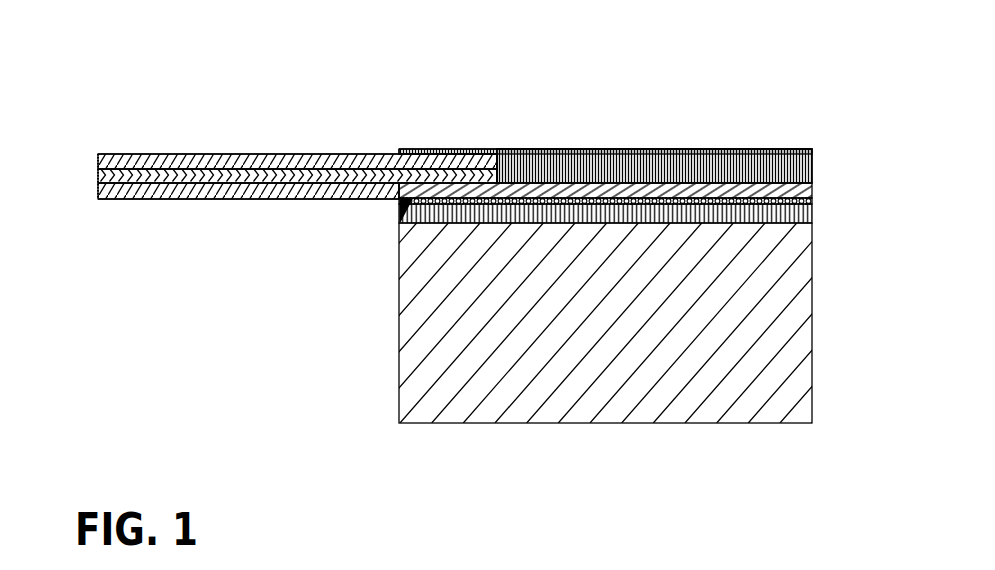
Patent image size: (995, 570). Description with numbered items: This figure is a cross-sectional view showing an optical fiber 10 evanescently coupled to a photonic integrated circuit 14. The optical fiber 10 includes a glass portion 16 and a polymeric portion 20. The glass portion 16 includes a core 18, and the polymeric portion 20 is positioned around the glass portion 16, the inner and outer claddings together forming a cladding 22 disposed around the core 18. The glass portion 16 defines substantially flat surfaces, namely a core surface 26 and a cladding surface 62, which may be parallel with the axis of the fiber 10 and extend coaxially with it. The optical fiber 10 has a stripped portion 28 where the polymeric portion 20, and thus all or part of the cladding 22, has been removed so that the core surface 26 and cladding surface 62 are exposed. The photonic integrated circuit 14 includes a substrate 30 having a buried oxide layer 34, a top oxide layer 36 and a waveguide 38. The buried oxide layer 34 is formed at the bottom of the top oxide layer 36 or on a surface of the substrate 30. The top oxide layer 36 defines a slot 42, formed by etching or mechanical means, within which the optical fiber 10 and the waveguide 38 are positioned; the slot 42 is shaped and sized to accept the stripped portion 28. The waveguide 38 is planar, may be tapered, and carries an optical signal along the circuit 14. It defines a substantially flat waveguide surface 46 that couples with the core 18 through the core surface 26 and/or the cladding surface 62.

The optical fiber 10 is at (264, 160).
The photonic integrated circuit 14 is at (614, 211).
The glass portion 16 is at (95, 177).
The core 18 is at (283, 172).
The polymeric portion 20 is at (208, 193).
The cladding 22 is at (250, 162).
The core surface 26 is at (455, 152).
The stripped portion 28 is at (400, 212).
The substrate 30 is at (787, 300).
The buried oxide layer 34 is at (453, 208).
The top oxide layer 36 is at (550, 160).
The waveguide 38 is at (762, 190).
The slot 42 is at (507, 140).
The waveguide surface 46 is at (648, 160).
The cladding surface 62 is at (480, 150).